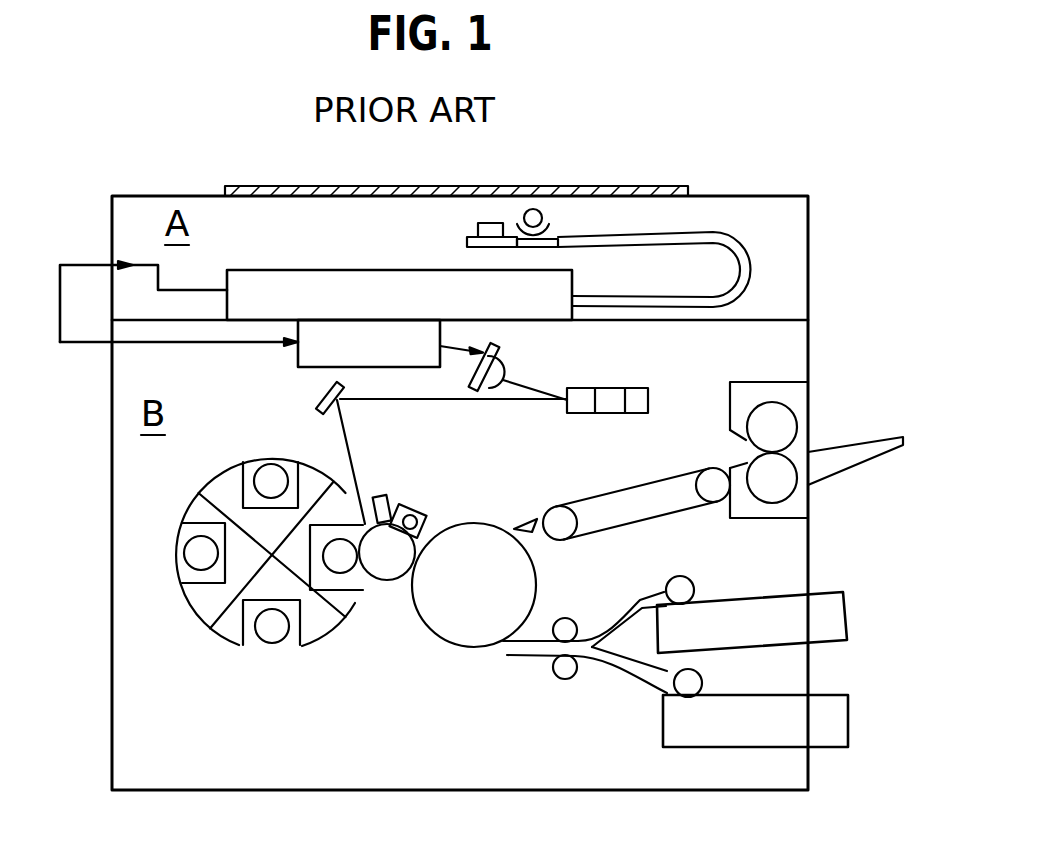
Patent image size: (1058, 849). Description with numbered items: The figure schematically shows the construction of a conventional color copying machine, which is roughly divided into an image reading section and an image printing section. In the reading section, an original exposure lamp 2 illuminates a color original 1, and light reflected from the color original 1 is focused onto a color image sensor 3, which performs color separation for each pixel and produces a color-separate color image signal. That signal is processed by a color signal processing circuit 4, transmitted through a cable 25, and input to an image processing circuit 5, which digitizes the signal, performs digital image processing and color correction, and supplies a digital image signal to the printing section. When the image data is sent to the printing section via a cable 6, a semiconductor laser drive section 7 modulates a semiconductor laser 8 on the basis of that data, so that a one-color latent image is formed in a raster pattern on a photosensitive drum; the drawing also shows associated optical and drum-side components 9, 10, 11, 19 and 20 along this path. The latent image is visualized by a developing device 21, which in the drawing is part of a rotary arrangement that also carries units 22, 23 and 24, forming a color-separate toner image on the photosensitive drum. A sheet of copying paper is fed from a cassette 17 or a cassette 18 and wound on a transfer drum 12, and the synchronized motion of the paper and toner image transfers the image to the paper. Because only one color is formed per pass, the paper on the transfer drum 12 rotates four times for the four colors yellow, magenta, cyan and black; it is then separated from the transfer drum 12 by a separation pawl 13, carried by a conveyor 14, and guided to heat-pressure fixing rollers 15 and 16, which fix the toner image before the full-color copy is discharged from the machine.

The color original 1 is at (676, 186).
The original exposure lamp 2 is at (548, 216).
The color image sensor 3 is at (478, 226).
The color signal processing circuit 4 is at (467, 247).
The image processing circuit 5 is at (290, 311).
The cable 6 is at (74, 265).
The semiconductor laser drive section 7 is at (364, 358).
The semiconductor laser 8 is at (500, 362).
The lens unit 9 is at (627, 388).
The reflecting mirror 10 is at (322, 395).
The photosensitive drum 11 is at (380, 578).
The transfer drum 12 is at (455, 648).
The separation pawl 13 is at (525, 522).
The conveyor belt 14 is at (624, 490).
The heat-pressure fixing roller 15 is at (758, 402).
The heat-pressure fixing roller 16 is at (765, 504).
The cassette 17 is at (737, 643).
The cassette 18 is at (737, 735).
The charger 19 is at (376, 496).
The cleaner 20 is at (418, 506).
The developing device 21 is at (365, 600).
The developing unit 22 is at (243, 648).
The developing unit 23 is at (182, 577).
The rotary developing device 24 is at (250, 458).
The cable 25 is at (738, 253).